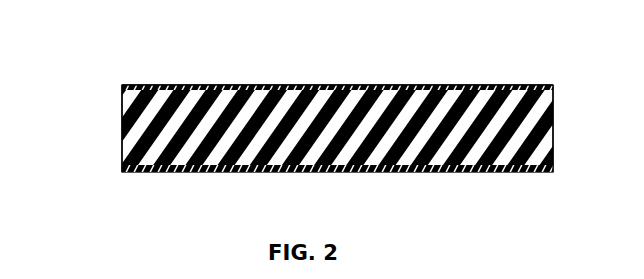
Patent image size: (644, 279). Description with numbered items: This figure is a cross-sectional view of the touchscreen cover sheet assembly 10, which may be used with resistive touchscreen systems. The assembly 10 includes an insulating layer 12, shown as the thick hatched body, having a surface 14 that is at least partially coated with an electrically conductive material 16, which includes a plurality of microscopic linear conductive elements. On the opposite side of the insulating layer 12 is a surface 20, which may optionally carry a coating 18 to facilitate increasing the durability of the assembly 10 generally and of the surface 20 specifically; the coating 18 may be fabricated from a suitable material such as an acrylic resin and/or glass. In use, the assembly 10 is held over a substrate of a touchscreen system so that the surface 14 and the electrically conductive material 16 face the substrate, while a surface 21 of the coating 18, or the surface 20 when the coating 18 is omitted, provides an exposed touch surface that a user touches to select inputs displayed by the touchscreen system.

The touchscreen cover sheet assembly 10 is at (72, 43).
The insulating layer 12 is at (350, 136).
The surface 14 is at (393, 169).
The electrically conductive material 16 is at (555, 170).
The coating 18 is at (122, 86).
The surface 20 is at (502, 86).
The surface 21 is at (352, 86).